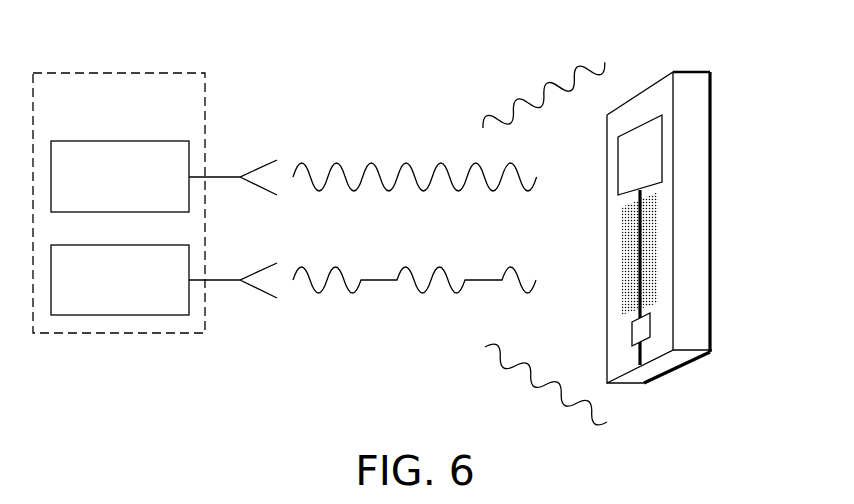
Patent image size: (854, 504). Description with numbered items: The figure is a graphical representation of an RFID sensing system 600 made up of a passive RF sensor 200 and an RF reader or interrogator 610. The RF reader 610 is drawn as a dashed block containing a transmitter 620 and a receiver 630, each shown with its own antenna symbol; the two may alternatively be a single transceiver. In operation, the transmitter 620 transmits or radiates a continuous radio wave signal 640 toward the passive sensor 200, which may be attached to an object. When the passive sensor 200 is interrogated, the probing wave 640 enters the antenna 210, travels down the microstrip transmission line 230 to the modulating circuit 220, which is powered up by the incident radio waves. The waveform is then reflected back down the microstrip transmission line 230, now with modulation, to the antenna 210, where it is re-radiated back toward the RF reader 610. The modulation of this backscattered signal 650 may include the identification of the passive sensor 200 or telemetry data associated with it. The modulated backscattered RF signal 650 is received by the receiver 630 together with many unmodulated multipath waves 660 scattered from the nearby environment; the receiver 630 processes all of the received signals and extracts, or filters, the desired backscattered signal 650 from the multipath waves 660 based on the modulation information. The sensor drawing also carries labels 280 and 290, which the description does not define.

The passive RF sensor 200 is at (655, 58).
The antenna 210 is at (652, 133).
The modulating circuit 220 is at (638, 328).
The microstrip transmission line 230 is at (640, 268).
The coupling region 280 is at (648, 212).
The base 290 is at (688, 362).
The sensing system 600 is at (202, 390).
The RF reader 610 is at (102, 117).
The transmitter 620 is at (172, 141).
The receiver 630 is at (170, 315).
The continuous radio wave signal 640 is at (430, 153).
The modulated backscattered RF signal 650 is at (412, 302).
The unmodulated multipath waves 660 is at (557, 120).